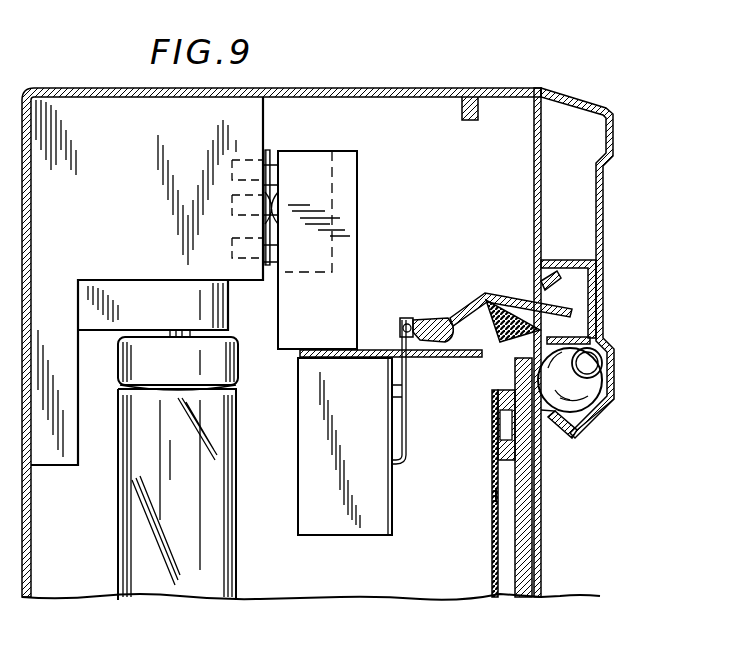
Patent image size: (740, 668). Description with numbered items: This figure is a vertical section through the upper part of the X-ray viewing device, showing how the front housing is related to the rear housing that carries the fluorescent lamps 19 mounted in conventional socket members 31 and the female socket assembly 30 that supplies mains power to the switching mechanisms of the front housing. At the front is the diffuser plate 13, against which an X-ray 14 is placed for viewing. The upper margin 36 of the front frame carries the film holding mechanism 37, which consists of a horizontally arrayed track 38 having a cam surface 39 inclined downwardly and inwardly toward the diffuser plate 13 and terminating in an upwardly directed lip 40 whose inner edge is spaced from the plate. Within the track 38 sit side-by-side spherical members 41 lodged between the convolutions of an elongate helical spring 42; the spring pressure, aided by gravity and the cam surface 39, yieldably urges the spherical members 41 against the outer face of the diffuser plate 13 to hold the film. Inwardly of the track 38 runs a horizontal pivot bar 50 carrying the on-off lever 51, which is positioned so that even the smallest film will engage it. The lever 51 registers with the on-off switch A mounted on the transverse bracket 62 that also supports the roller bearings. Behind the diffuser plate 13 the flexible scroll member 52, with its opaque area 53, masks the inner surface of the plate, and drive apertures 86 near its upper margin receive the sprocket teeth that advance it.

The diffuser plate 13 is at (524, 557).
The X-ray 14 is at (538, 540).
The fluorescent lamps 19 is at (226, 426).
The female socket assembly 30 is at (270, 153).
The socket members 31 is at (210, 301).
The upper margin 36 is at (600, 216).
The film holding mechanism 37 is at (644, 402).
The track 38 is at (572, 440).
The cam surface 39 is at (582, 432).
The lip 40 is at (556, 430).
The spherical members 41 is at (580, 404).
The helical spring 42 is at (608, 358).
The pivot bar 50 is at (448, 314).
The on-off lever 51 is at (490, 295).
The scroll member 52 is at (494, 563).
The opaque area 53 is at (497, 496).
The bracket 62 is at (466, 358).
The drive apertures 86 is at (492, 408).
The on-off switch A is at (386, 522).